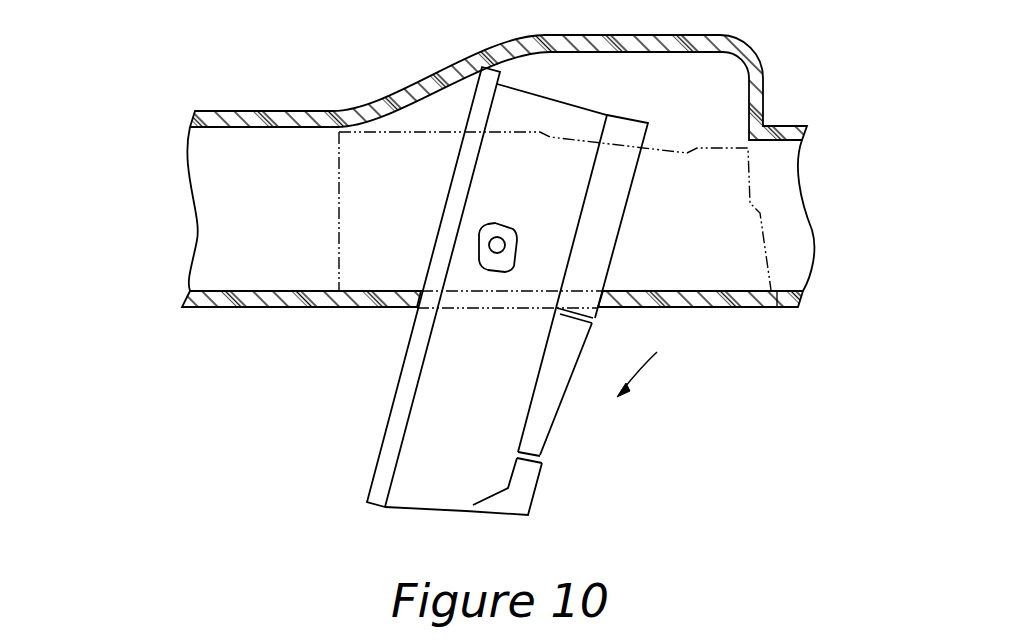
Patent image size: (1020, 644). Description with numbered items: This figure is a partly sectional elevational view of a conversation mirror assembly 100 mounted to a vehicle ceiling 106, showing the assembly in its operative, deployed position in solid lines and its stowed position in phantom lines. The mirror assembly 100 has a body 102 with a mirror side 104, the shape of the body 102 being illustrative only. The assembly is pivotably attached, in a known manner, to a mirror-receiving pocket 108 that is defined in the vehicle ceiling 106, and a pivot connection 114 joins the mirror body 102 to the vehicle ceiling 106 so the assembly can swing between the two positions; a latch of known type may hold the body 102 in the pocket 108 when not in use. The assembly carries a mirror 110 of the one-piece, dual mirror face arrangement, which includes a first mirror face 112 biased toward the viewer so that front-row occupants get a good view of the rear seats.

The conversation mirror assembly 100 is at (455, 289).
The body 102 is at (484, 312).
The mirror side 104 is at (514, 470).
The vehicle ceiling 106 is at (297, 111).
The mirror-receiving pocket 108 is at (748, 286).
The mirror 110 is at (570, 340).
The first mirror face 112 is at (543, 408).
The pivot connection 114 is at (497, 244).